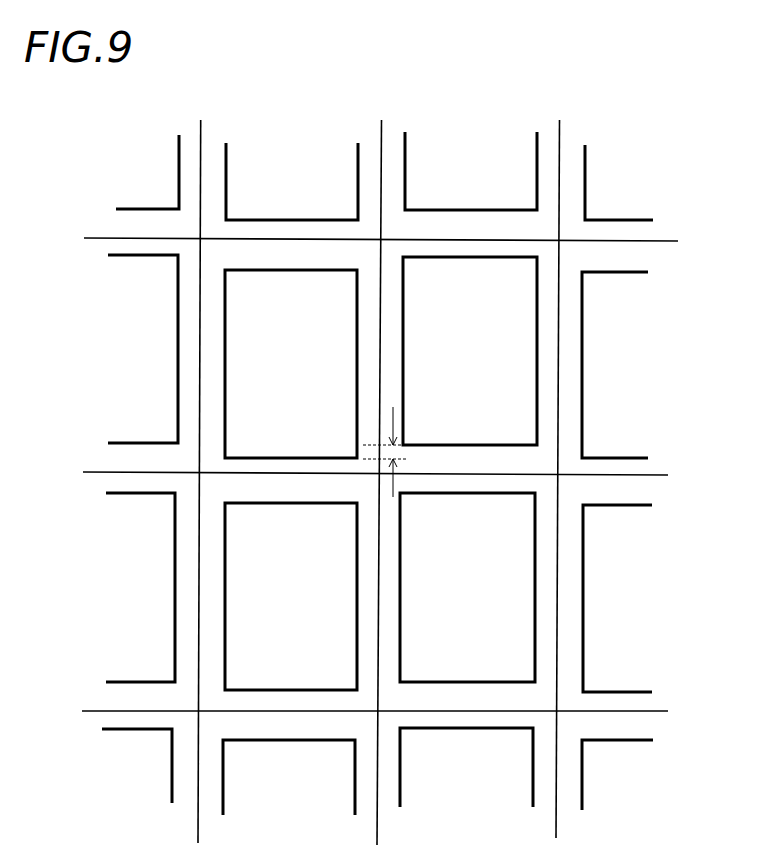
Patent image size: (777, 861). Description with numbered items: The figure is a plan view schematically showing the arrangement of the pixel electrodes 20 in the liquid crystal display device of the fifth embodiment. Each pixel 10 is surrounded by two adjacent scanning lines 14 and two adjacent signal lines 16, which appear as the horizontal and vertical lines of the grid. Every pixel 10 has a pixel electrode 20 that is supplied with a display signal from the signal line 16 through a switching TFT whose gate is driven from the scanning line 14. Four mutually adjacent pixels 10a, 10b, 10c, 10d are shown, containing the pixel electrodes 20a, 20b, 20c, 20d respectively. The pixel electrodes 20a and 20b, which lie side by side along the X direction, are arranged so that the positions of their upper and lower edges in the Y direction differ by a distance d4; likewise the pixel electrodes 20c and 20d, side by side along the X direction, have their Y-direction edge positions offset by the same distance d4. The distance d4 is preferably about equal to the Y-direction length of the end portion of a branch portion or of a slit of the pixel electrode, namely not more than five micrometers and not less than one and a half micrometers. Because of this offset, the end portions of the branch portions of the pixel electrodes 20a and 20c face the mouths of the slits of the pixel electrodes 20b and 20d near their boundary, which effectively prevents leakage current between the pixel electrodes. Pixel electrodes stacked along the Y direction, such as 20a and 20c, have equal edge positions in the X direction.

The pixel 10 is at (382, 472).
The pixel 10a is at (270, 253).
The pixel 10b is at (470, 247).
The pixel 10c is at (212, 595).
The pixel 10d is at (547, 595).
The pixel electrode 20 is at (381, 473).
The pixel electrode 20a is at (291, 364).
The pixel electrode 20b is at (470, 351).
The pixel electrode 20c is at (291, 596).
The pixel electrode 20d is at (467, 587).
The scanning line 14 is at (657, 240).
The signal line 16 is at (383, 122).
The distance d4 is at (399, 452).